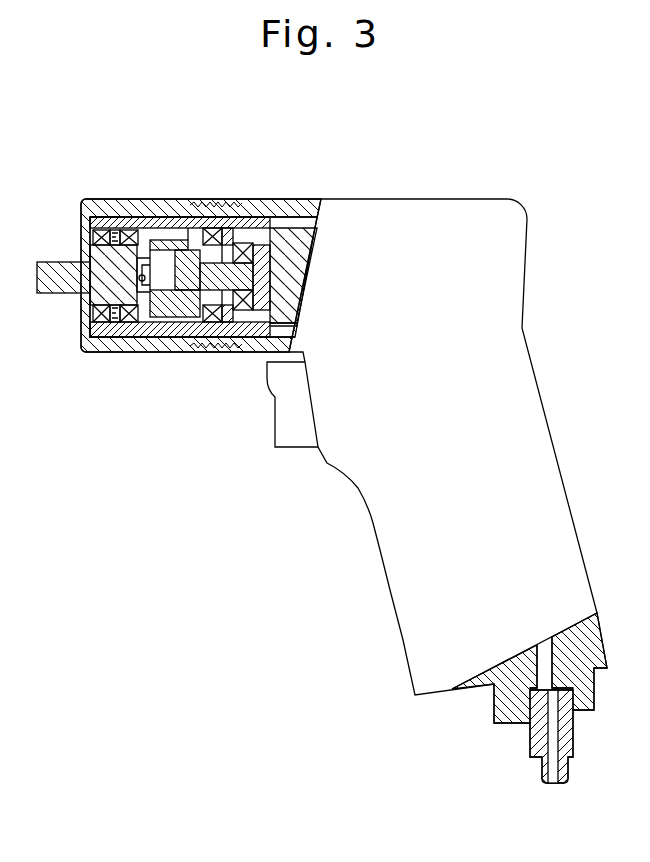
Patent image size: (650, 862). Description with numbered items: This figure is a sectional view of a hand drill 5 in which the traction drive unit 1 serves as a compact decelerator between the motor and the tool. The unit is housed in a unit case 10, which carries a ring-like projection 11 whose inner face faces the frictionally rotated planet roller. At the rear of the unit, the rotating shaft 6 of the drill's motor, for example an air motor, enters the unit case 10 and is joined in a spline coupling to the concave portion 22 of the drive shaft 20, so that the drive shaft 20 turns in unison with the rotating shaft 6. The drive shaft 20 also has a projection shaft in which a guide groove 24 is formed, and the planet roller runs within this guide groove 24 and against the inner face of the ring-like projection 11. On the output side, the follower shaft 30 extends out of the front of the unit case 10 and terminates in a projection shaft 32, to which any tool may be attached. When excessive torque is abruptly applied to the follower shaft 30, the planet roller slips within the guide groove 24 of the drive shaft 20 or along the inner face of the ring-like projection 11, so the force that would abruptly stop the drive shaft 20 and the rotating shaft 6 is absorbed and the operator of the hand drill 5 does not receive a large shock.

The traction drive unit 1 is at (157, 342).
The hand drill 5 is at (474, 186).
The rotating shaft 6 is at (262, 247).
The unit case 10 is at (120, 217).
The ring-like projection 11 is at (148, 229).
The drive shaft 20 is at (180, 233).
The concave portion 22 is at (222, 241).
The guide groove 24 is at (155, 291).
The follower shaft 30 is at (93, 277).
The projection shaft 32 is at (44, 262).